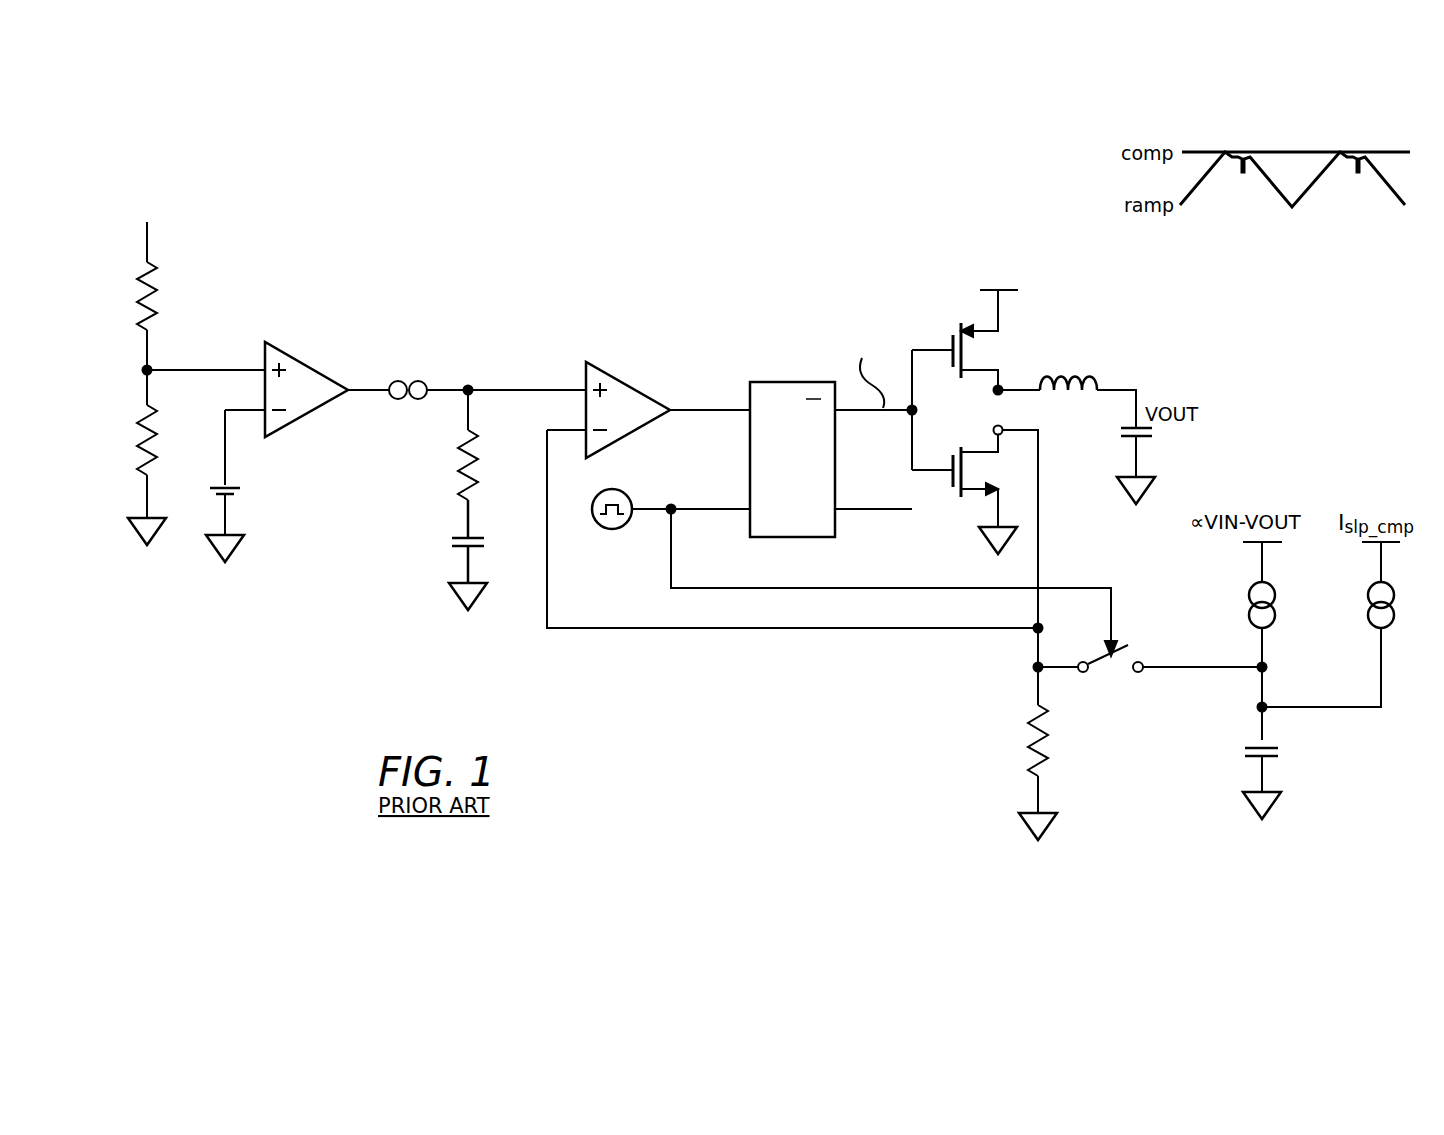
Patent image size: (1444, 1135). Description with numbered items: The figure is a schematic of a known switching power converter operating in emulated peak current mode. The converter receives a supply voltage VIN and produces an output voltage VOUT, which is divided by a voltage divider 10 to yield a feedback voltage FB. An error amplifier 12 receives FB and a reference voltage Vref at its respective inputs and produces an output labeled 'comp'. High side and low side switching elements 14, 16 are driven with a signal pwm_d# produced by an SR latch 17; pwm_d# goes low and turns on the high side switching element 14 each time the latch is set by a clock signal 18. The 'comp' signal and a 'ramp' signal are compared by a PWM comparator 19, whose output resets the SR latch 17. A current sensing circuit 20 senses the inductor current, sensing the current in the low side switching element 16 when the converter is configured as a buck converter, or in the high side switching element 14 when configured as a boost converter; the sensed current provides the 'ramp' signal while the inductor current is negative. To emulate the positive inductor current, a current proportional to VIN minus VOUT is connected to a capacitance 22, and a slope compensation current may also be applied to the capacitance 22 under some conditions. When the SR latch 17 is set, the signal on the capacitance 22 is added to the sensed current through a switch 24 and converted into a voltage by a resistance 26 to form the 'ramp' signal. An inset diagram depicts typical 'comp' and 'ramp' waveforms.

The voltage divider 10 is at (170, 338).
The error amplifier 12 is at (302, 421).
The high side switching element 14 is at (1020, 346).
The low side switching element 16 is at (1024, 470).
The SR latch 17 is at (790, 382).
The clock signal 18 is at (601, 528).
The PWM comparator 19 is at (632, 436).
The current sensing circuit 20 is at (998, 426).
The capacitance 22 is at (1281, 742).
The switch 24 is at (1108, 672).
The resistance 26 is at (1028, 750).